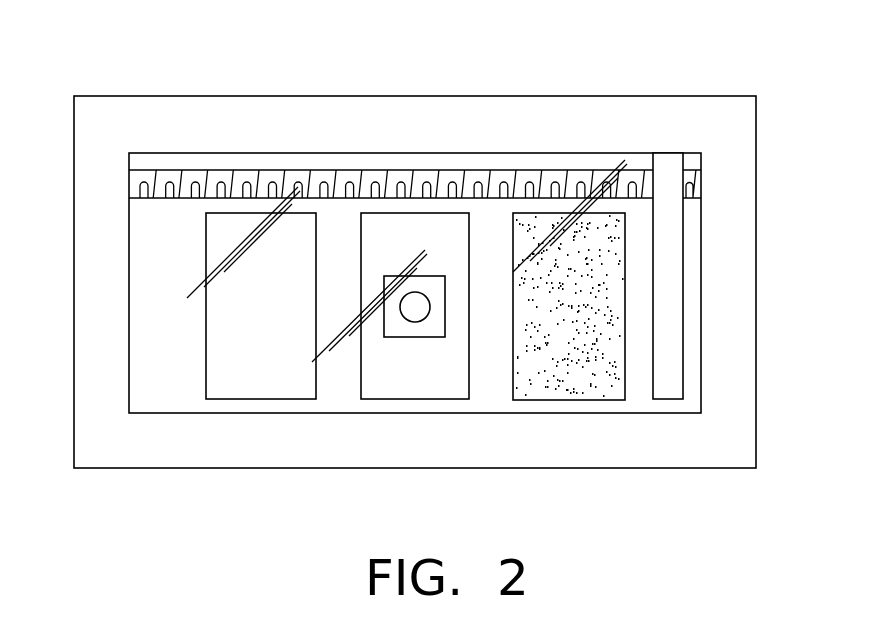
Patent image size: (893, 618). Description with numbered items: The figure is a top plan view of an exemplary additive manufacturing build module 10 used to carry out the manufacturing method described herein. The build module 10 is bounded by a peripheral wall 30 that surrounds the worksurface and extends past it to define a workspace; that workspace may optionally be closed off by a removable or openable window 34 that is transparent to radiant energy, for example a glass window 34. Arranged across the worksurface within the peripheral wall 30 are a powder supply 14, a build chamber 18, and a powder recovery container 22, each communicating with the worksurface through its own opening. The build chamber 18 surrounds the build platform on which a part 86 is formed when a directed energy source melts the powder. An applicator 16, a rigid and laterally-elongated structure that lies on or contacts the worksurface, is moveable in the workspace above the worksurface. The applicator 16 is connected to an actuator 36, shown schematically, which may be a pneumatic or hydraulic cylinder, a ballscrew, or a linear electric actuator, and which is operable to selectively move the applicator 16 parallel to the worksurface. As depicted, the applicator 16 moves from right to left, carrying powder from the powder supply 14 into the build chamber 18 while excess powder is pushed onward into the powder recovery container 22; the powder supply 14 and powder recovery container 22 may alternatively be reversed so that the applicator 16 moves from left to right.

The build module 10 is at (607, 91).
The powder supply 14 is at (589, 307).
The applicator 16 is at (670, 165).
The build chamber 18 is at (429, 376).
The powder recovery container 22 is at (277, 309).
The peripheral wall 30 is at (450, 127).
The window 34 is at (171, 333).
The actuator 36 is at (531, 178).
The part 86 is at (431, 276).